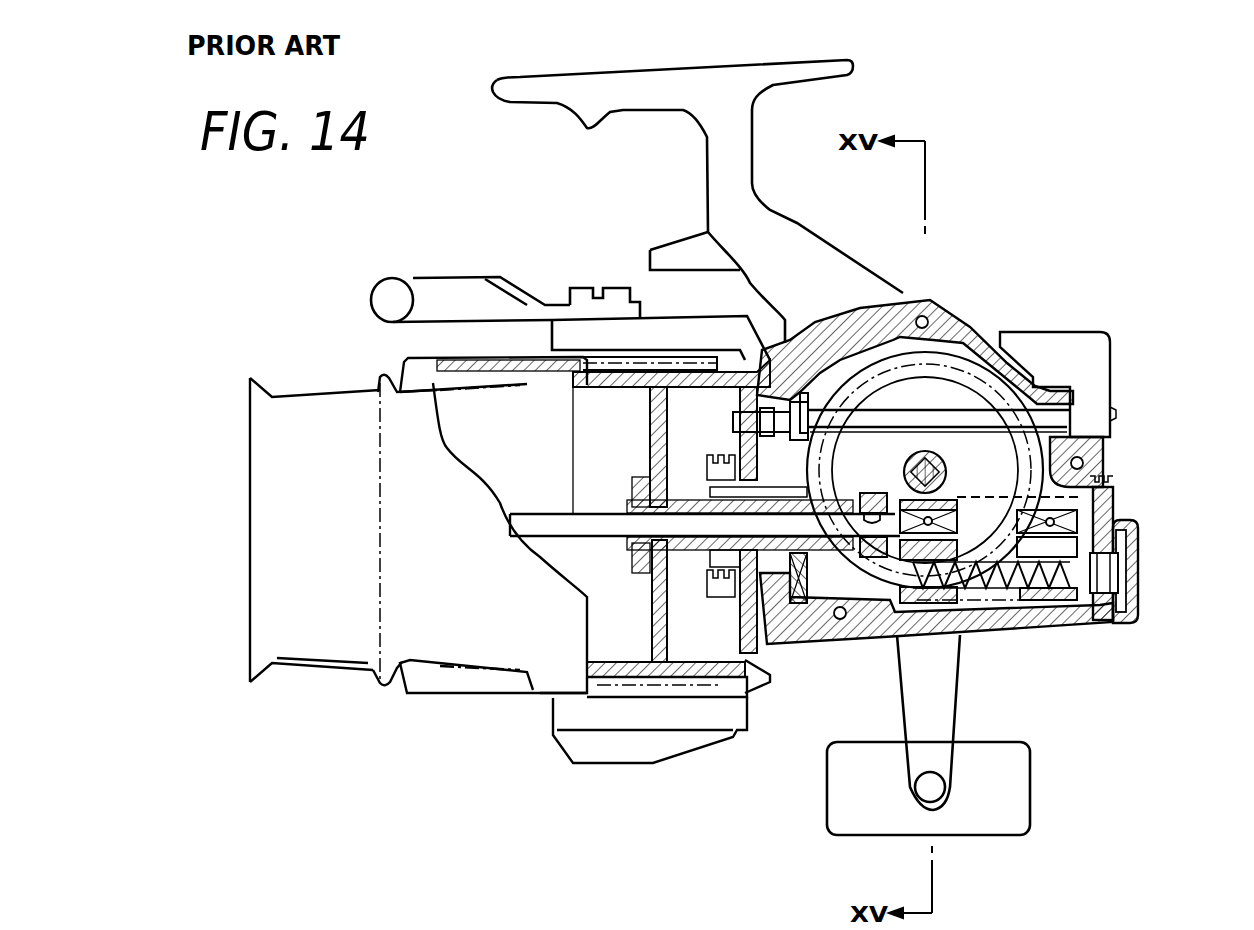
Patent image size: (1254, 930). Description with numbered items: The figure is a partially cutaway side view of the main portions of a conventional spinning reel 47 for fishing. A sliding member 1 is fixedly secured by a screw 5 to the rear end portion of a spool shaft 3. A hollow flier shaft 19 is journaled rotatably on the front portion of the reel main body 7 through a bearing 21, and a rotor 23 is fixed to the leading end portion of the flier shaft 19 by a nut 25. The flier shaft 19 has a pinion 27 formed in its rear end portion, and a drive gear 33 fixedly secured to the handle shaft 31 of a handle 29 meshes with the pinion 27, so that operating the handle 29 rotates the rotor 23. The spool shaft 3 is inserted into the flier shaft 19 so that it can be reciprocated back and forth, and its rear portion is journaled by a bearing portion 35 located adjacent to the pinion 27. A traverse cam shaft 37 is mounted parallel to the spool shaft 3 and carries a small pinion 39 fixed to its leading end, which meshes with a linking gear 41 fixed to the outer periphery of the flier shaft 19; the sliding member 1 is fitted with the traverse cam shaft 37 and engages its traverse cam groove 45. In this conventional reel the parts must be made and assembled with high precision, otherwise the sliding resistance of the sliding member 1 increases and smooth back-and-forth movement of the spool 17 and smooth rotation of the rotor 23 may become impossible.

The sliding member 1 is at (1068, 547).
The spool shaft 3 is at (553, 520).
The screw 5 is at (957, 540).
The reel main body 7 is at (953, 320).
The spool 17 is at (442, 686).
The flier shaft 19 is at (673, 493).
The bearing 21 is at (723, 670).
The rotor 23 is at (663, 667).
The nut 25 is at (585, 593).
The pinion 27 is at (828, 607).
The handle 29 is at (948, 760).
The handle shaft 31 is at (935, 452).
The drive gear 33 is at (1060, 428).
The bearing portion 35 is at (870, 515).
The traverse cam shaft 37 is at (1083, 572).
The pinion 39 is at (758, 695).
The linking gear 41 is at (757, 417).
The traverse cam groove 45 is at (1045, 577).
The spinning reel 47 is at (960, 237).